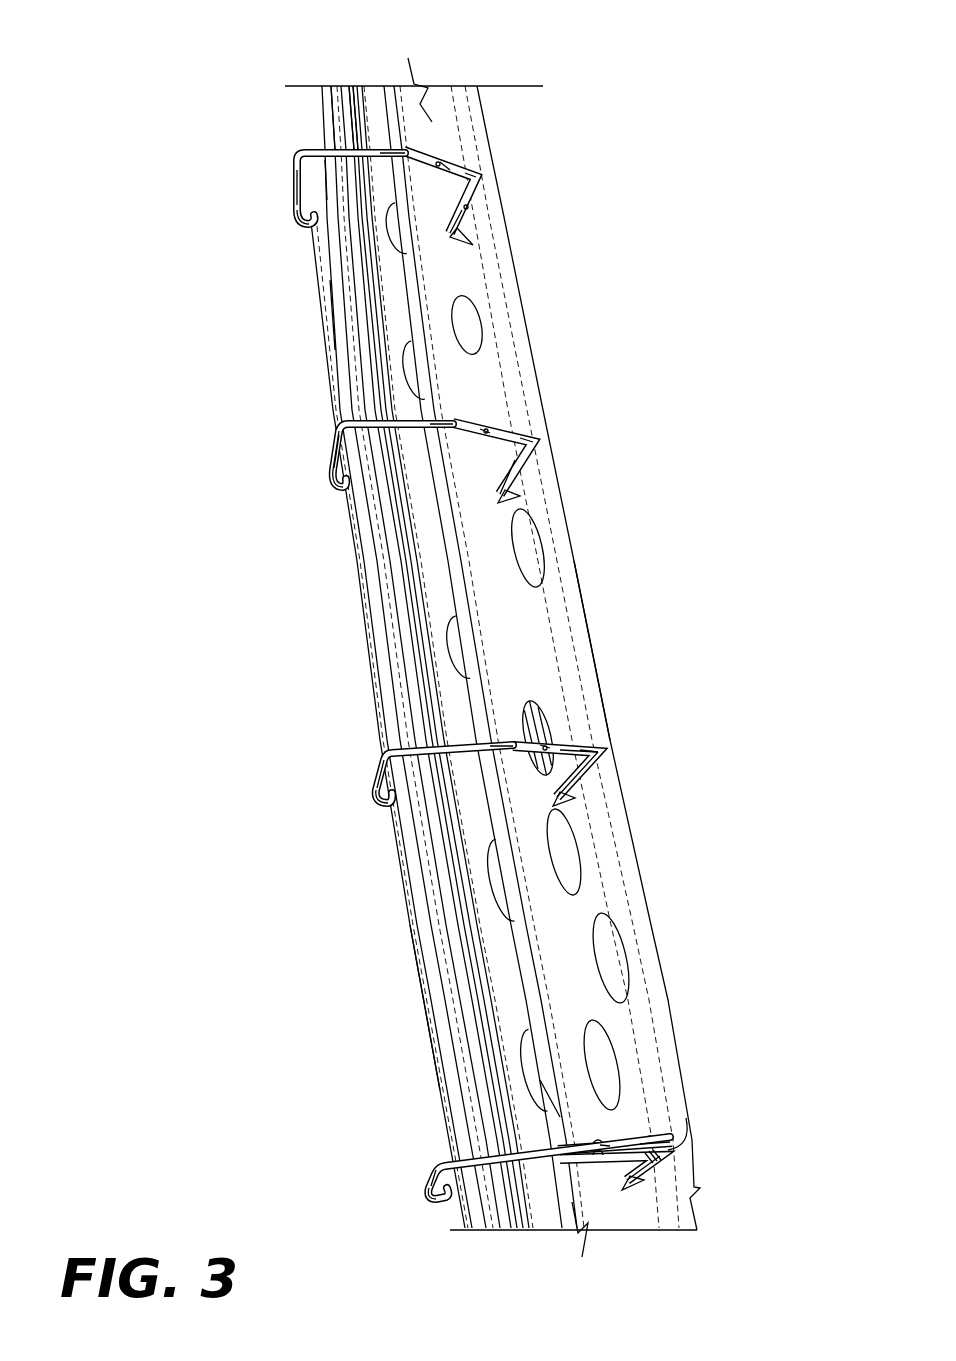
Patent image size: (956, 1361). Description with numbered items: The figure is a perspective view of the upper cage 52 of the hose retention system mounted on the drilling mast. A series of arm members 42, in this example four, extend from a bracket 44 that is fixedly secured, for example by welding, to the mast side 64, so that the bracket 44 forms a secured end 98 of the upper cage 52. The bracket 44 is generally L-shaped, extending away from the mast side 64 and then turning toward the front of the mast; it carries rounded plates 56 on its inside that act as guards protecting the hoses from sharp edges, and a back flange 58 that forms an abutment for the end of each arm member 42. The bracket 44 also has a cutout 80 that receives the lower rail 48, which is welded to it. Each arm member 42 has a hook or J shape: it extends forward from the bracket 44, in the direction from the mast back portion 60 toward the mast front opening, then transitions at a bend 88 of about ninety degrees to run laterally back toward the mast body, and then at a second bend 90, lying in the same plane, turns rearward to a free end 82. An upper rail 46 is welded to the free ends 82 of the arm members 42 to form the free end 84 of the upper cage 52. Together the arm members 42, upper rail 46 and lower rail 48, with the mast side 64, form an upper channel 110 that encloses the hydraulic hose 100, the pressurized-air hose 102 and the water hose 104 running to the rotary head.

The arm member 42 is at (500, 698).
The bracket 44 is at (477, 193).
The upper rail 46 is at (435, 1087).
The lower rail 48 is at (560, 1117).
The upper cage 52 is at (260, 470).
The rounded plate 56 is at (463, 223).
The back flange 58 is at (480, 183).
The back portion 60 is at (573, 550).
The side 64 is at (560, 643).
The cutout 80 is at (405, 151).
The free end 82 is at (287, 242).
The free end 84 is at (320, 305).
The bend 88 is at (303, 155).
The bend 90 is at (292, 218).
The secured end 98 is at (467, 167).
The hose 100 is at (330, 113).
The hose 102 is at (353, 138).
The hose 104 is at (345, 84).
The upper channel 110 is at (322, 200).